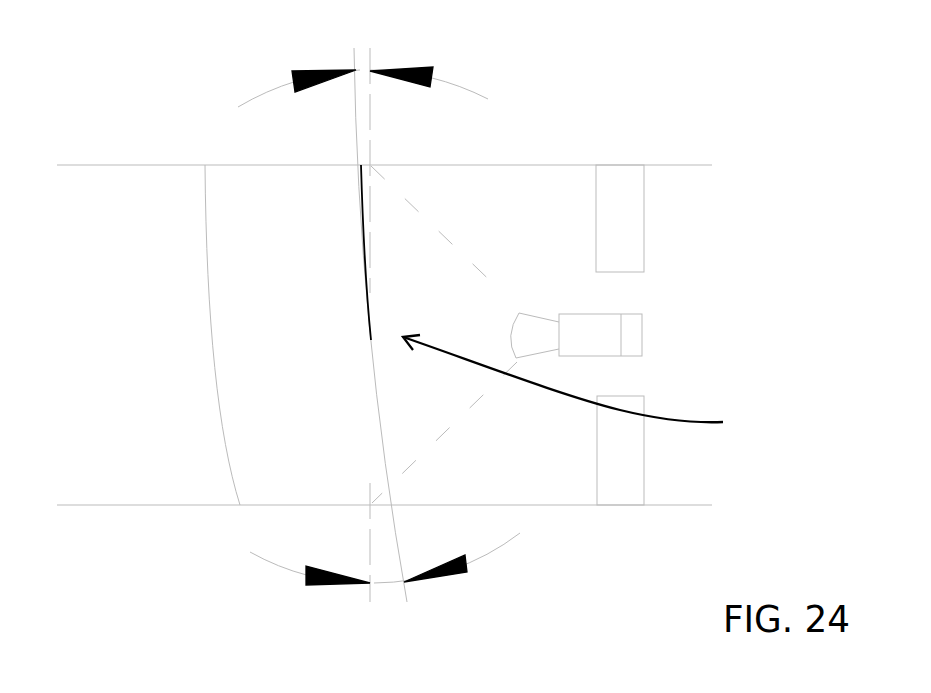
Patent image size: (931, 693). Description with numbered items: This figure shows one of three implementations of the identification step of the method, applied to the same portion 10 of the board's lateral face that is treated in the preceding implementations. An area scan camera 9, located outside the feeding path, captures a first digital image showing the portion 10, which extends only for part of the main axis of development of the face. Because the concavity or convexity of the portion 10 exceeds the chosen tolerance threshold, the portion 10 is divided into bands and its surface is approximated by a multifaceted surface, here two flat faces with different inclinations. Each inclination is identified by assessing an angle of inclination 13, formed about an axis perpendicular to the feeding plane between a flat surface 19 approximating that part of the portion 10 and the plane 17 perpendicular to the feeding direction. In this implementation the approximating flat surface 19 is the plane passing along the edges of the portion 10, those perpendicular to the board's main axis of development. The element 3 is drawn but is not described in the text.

The curved window / cover 3 is at (283, 288).
The area scan camera 9 is at (577, 328).
The portion 10 is at (579, 380).
The angle of inclination 13 is at (380, 326).
The plane perpendicular to the feeding direction 17 is at (370, 98).
The flat surface 19 is at (357, 122).